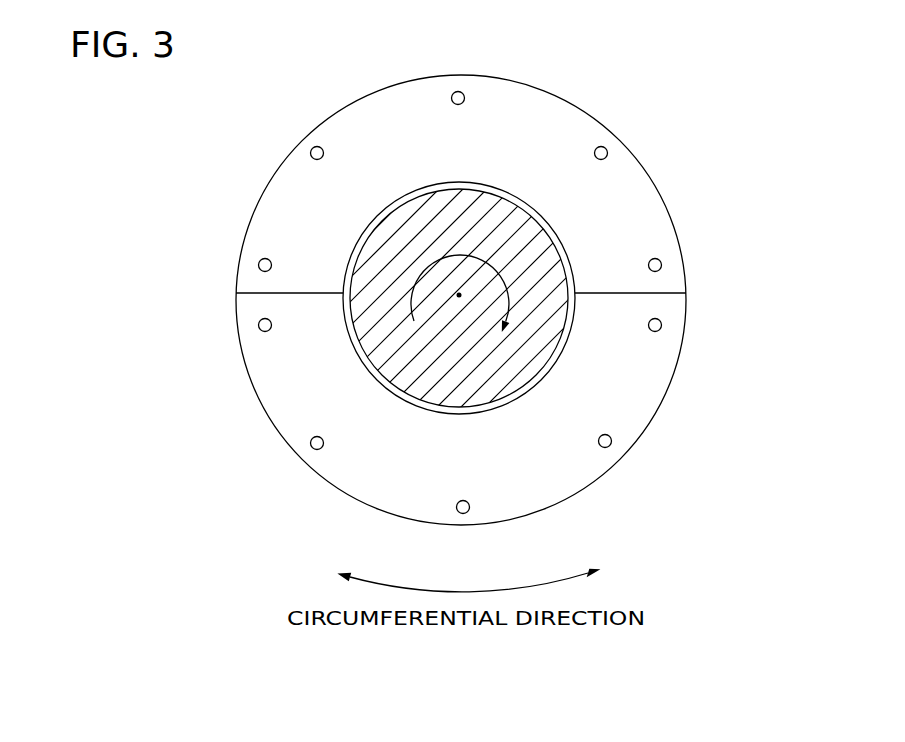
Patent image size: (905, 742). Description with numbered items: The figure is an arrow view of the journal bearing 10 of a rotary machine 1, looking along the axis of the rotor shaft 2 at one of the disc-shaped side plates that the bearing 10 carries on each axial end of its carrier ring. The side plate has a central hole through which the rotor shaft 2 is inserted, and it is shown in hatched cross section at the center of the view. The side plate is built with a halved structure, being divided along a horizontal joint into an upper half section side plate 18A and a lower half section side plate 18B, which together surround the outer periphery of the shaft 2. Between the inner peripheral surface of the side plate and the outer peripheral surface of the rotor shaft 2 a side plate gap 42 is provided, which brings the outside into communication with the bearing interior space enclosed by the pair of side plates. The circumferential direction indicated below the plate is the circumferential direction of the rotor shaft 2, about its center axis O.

The rotary machine 1 is at (800, 50).
The journal bearing 10 is at (628, 132).
The rotor shaft 2 is at (462, 205).
The side plate gap 42 is at (402, 197).
The upper half section side plate 18A is at (272, 220).
The lower half section side plate 18B is at (288, 418).